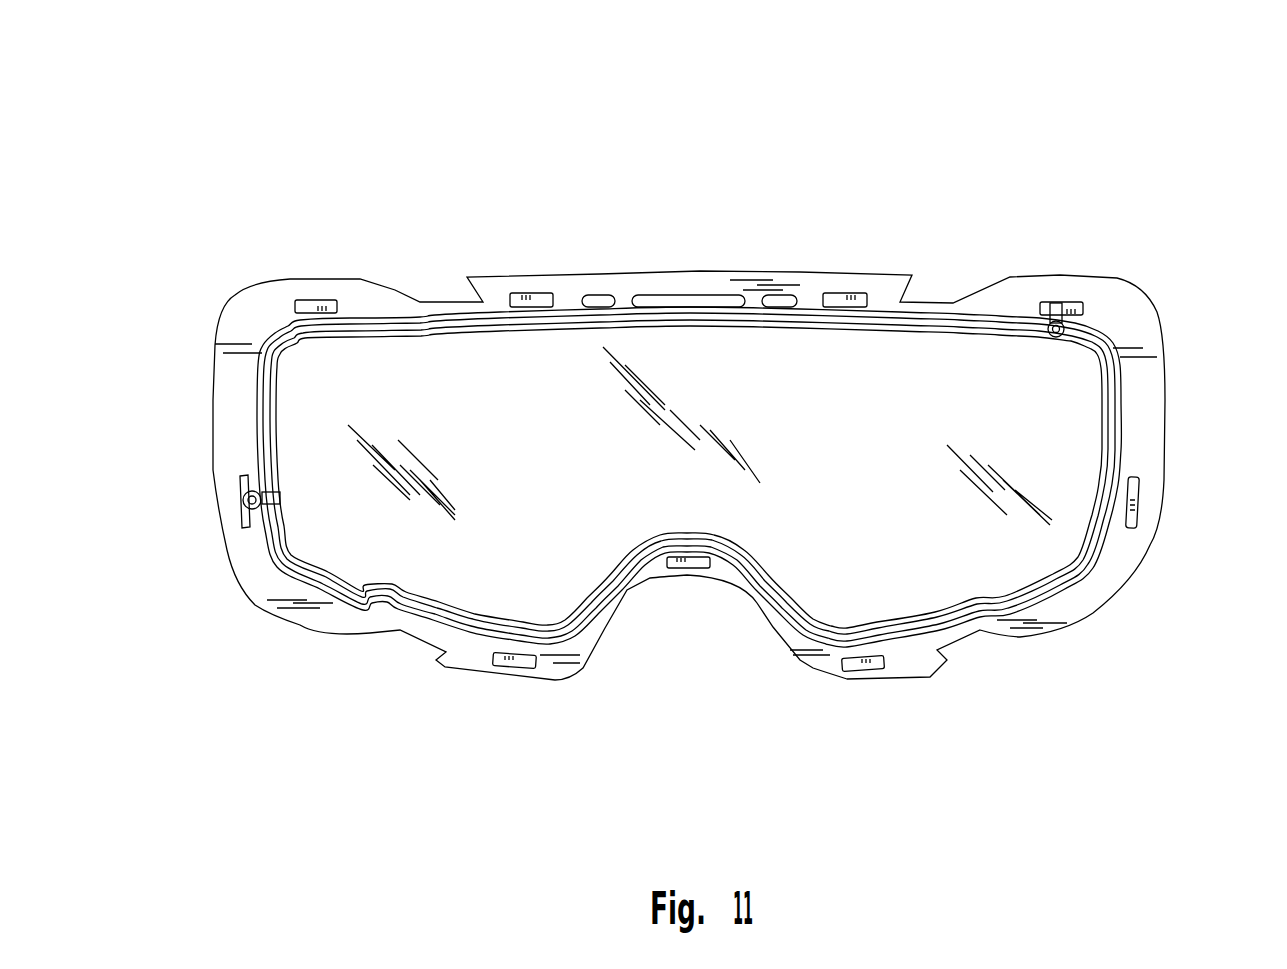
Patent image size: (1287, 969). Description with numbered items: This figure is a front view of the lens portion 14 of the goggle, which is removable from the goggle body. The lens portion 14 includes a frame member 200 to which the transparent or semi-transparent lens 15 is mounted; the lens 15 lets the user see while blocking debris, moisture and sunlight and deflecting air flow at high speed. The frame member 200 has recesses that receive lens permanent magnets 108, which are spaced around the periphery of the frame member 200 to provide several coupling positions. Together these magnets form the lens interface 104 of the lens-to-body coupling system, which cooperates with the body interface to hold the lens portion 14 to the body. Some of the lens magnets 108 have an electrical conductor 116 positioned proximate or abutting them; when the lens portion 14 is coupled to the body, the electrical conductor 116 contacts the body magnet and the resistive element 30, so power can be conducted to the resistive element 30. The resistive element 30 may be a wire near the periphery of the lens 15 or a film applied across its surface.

The lens portion 14 is at (665, 168).
The lens 15 is at (1118, 412).
The resistive element 30 is at (435, 323).
The lens interface 104 is at (315, 297).
The lens permanent magnet 108 is at (543, 297).
The electrical conductor 116 is at (1066, 327).
The frame member 200 is at (1081, 607).